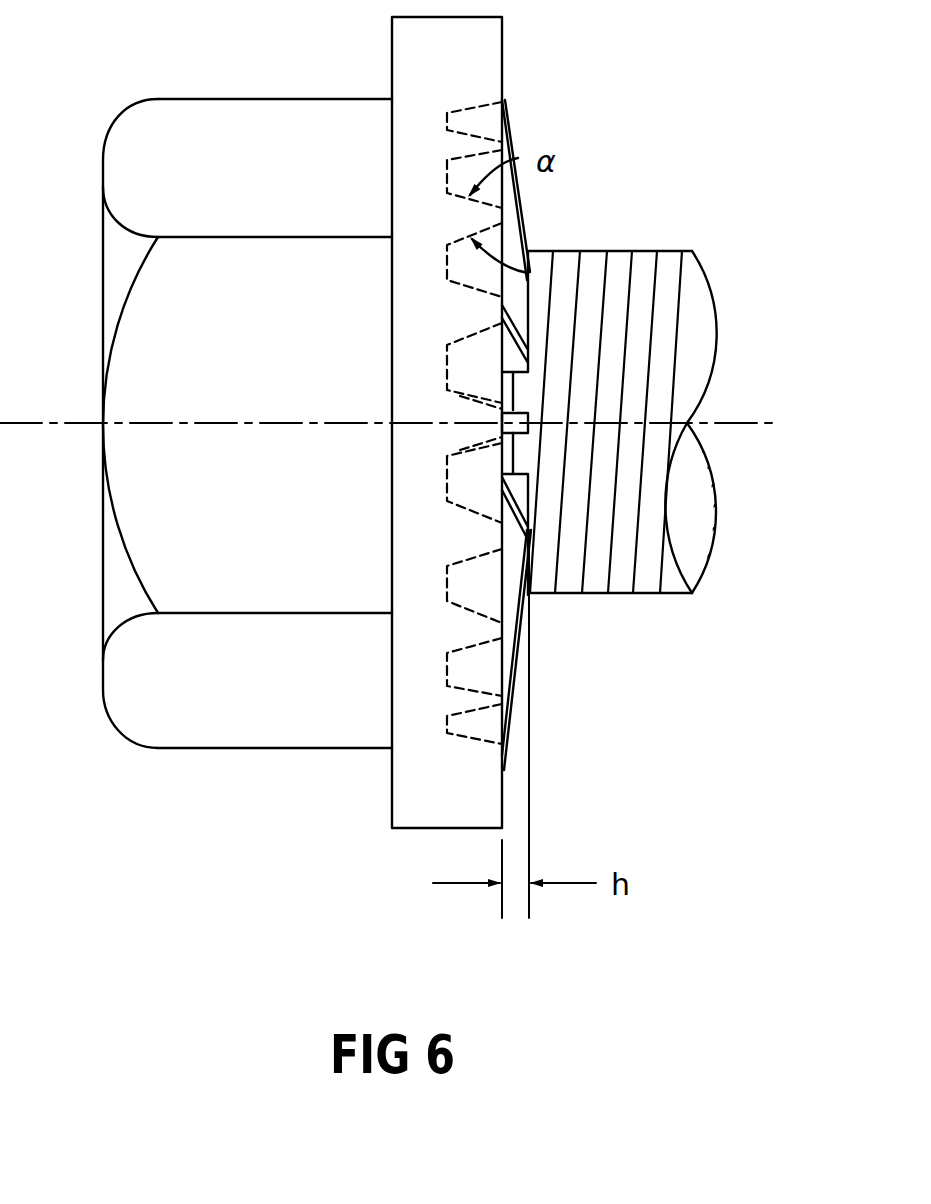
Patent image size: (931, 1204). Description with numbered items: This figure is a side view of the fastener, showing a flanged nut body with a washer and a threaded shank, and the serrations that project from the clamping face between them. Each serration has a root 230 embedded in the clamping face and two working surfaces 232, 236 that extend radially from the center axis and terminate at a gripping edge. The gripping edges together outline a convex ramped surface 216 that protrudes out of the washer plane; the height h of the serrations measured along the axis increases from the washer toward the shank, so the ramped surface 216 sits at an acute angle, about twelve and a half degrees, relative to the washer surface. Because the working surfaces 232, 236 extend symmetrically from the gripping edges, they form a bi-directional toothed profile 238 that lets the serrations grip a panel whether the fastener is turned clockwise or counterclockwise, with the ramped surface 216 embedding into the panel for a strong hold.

The ramped surface 216 is at (532, 215).
The root 230 is at (457, 633).
The working surface 232 is at (513, 447).
The working surface 236 is at (480, 503).
The bi-directional toothed profile 238 is at (438, 690).